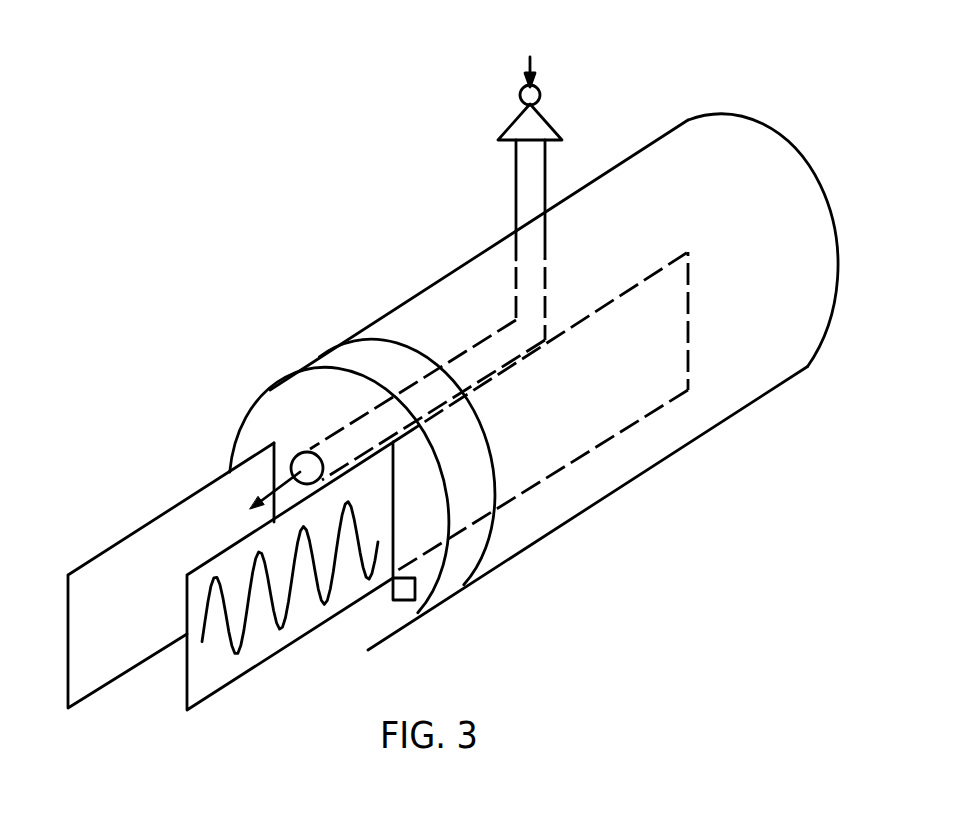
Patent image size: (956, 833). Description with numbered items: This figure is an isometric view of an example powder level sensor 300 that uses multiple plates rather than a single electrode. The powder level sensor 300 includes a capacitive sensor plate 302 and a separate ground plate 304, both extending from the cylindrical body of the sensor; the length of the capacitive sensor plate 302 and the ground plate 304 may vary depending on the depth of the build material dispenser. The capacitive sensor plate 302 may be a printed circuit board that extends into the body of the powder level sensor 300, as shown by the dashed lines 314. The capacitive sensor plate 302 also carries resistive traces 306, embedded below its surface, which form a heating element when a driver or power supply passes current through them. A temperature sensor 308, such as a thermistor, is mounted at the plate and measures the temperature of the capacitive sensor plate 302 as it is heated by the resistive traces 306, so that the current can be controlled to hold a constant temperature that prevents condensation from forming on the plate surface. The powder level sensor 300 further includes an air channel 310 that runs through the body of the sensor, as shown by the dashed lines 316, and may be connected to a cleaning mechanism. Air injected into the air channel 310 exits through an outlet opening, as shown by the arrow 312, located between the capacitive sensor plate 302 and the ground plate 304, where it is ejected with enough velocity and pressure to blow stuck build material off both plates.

The powder level sensor 300 is at (730, 115).
The capacitive sensor plate 302 is at (267, 653).
The ground plate 304 is at (128, 537).
The resistive traces 306 is at (203, 648).
The temperature sensor 308 is at (408, 600).
The air channel 310 is at (505, 130).
The arrow 312 is at (274, 483).
The dashed lines 314 is at (688, 337).
The dashed lines 316 is at (517, 320).